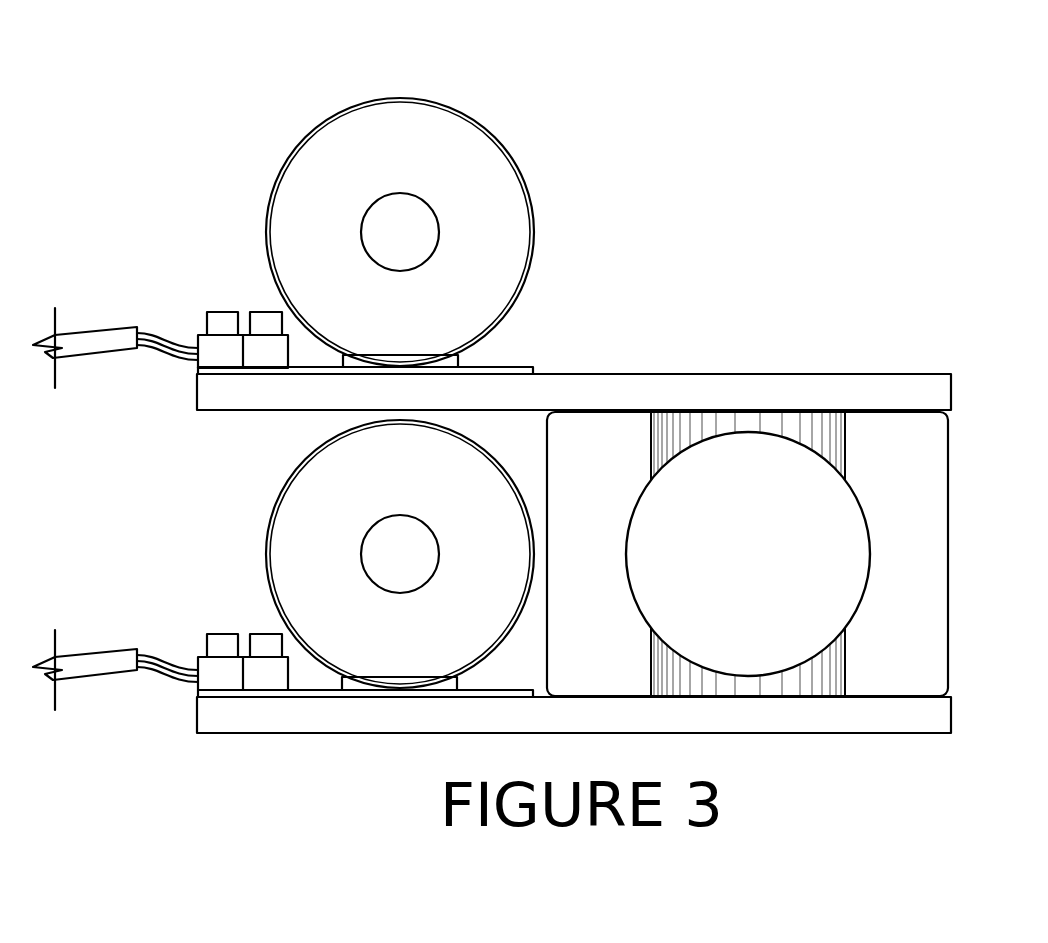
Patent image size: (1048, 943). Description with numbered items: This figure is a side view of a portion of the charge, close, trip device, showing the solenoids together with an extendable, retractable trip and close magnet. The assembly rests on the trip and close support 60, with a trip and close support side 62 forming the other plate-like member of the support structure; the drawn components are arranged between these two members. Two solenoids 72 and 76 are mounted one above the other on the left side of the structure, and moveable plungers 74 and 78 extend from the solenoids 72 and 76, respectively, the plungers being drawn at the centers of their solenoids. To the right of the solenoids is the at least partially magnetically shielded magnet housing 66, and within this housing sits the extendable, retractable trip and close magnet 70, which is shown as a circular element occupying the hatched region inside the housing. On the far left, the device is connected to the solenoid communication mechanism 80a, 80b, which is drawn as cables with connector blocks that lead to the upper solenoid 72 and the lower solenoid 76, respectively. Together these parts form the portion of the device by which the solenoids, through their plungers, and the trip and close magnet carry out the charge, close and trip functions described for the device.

The trip and close support 60 is at (937, 713).
The trip and close support side 62 is at (867, 393).
The magnet housing 66 is at (910, 455).
The trip and close magnet 70 is at (812, 577).
The solenoid 72 is at (365, 132).
The moveable plunger 74 is at (400, 232).
The solenoid 76 is at (295, 545).
The moveable plunger 78 is at (400, 552).
The solenoid communication mechanism 80a is at (105, 338).
The solenoid communication mechanism 80b is at (101, 660).